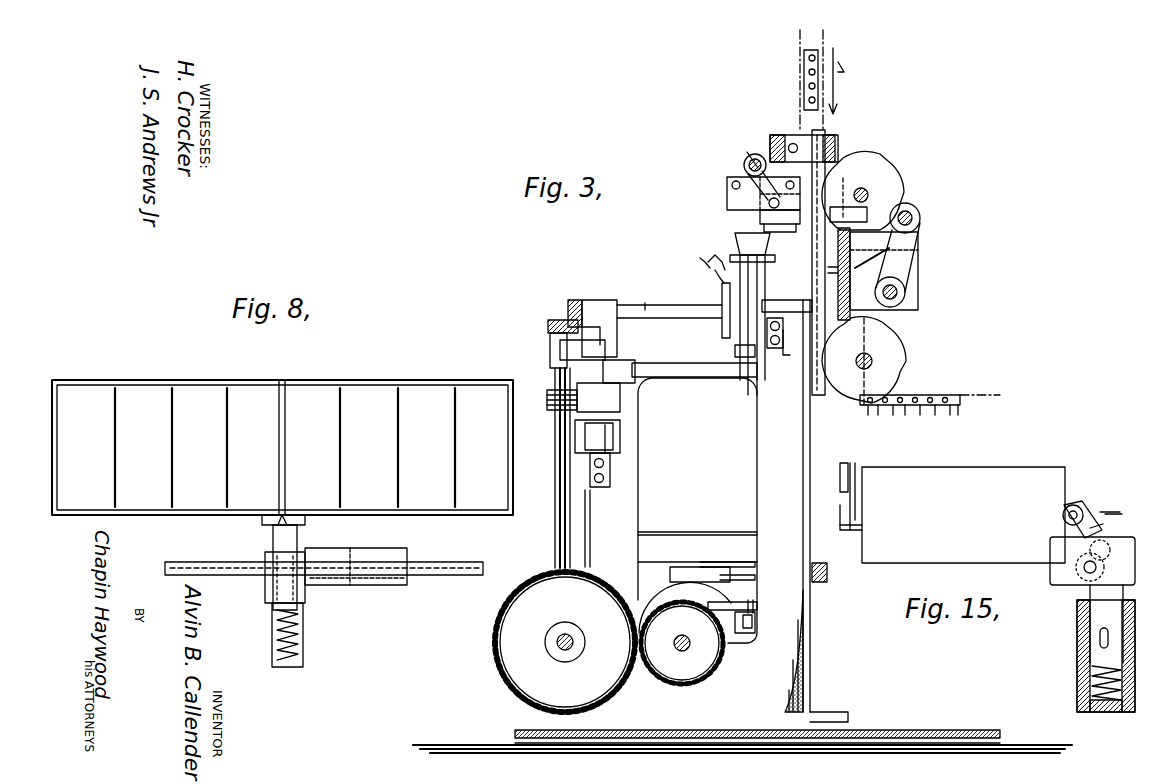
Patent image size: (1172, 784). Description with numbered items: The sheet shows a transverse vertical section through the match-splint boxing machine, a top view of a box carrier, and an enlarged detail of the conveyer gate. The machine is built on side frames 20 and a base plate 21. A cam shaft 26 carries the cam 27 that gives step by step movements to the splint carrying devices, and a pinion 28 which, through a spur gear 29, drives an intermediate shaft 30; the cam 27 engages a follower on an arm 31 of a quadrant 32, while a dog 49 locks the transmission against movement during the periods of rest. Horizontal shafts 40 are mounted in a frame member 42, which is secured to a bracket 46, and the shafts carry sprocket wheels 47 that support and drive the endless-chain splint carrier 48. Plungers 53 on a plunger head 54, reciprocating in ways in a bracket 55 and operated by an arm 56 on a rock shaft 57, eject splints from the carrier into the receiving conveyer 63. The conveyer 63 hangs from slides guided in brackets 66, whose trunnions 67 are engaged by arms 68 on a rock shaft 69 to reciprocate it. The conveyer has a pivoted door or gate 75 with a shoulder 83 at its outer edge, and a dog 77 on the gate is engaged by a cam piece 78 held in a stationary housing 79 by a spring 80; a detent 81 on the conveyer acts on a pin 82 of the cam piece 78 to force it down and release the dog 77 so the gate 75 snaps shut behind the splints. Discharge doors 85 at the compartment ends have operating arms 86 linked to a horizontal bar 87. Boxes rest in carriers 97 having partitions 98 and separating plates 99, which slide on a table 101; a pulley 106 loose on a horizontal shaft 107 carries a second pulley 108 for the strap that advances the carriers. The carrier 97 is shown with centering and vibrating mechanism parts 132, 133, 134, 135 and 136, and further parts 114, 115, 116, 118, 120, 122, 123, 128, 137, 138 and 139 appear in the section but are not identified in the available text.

In FIG. 8, the box carrier 97 is at (282, 432).
In FIG. 8, the partition 98 is at (290, 388).
In FIG. 8, the separating plates 99 is at (120, 458).
In FIG. 8, the box support 133 is at (272, 522).
In FIG. 8, the rod 132 is at (296, 542).
In FIG. 3, the rod 132 is at (715, 268).
In FIG. 8, the guide block 134 is at (300, 590).
In FIG. 8, the bar 135 is at (445, 577).
In FIG. 3, the bar 135 is at (722, 288).
In FIG. 8, the sleeve 136 is at (385, 586).
In FIG. 3, the side frames 20 is at (816, 511).
In FIG. 3, the base plate 21 is at (742, 726).
In FIG. 3, the frame column 114 is at (803, 385).
In FIG. 3, the frame member 42 is at (840, 150).
In FIG. 3, the brackets 66 is at (728, 185).
In FIG. 3, the trunnions 67 is at (734, 193).
In FIG. 3, the receiving conveyer 63 is at (760, 218).
In FIG. 15, the receiving conveyer 63 is at (963, 515).
In FIG. 3, the arms 68 is at (744, 166).
In FIG. 3, the rock shaft 69 is at (752, 152).
In FIG. 3, the sprocket wheels 47 is at (892, 172).
In FIG. 3, the plungers 53 is at (834, 210).
In FIG. 3, the horizontal shafts 40 is at (869, 195).
In FIG. 3, the plunger head 54 is at (920, 212).
In FIG. 3, the bracket 55 is at (895, 247).
In FIG. 3, the arm 56 is at (908, 270).
In FIG. 3, the rock shaft 57 is at (906, 292).
In FIG. 3, the door or gate 75 is at (905, 278).
In FIG. 15, the door or gate 75 is at (1104, 510).
In FIG. 3, the splint carrier 48 is at (938, 400).
In FIG. 3, the bracket 46 is at (766, 306).
In FIG. 3, the table 101 is at (768, 260).
In FIG. 3, the discharge door 85 is at (706, 245).
In FIG. 3, the bracket 115 is at (788, 332).
In FIG. 3, the pulley 108 is at (735, 350).
In FIG. 3, the pulley 106 is at (755, 380).
In FIG. 3, the shaft 137 is at (712, 318).
In FIG. 3, the horizontal shaft 107 is at (642, 295).
In FIG. 3, the bevel gear 138 is at (575, 302).
In FIG. 3, the bevel gear 139 is at (548, 325).
In FIG. 3, the bearing 128 is at (550, 357).
In FIG. 3, the threaded collar 122 is at (553, 412).
In FIG. 3, the vertical shaft 123 is at (557, 492).
In FIG. 3, the slide bar 116 is at (622, 407).
In FIG. 3, the block 118 is at (620, 428).
In FIG. 3, the bracket 120 is at (612, 468).
In FIG. 3, the cam 27 is at (658, 590).
In FIG. 3, the arm 31 is at (690, 568).
In FIG. 3, the quadrant 32 is at (752, 565).
In FIG. 3, the dog 49 is at (745, 603).
In FIG. 3, the spur gear 29 is at (500, 688).
In FIG. 3, the intermediate shaft 30 is at (565, 652).
In FIG. 3, the pinion 28 is at (672, 685).
In FIG. 3, the cam shaft 26 is at (692, 650).
In FIG. 3, the horizontal bar 87 is at (840, 482).
In FIG. 3, the operating arms 86 is at (862, 493).
In FIG. 15, the cam piece 78 is at (1135, 555).
In FIG. 15, the housing 79 is at (1077, 640).
In FIG. 15, the spring 80 is at (1088, 687).
In FIG. 15, the dog 77 is at (1062, 524).
In FIG. 15, the pin 82 is at (1086, 574).
In FIG. 15, the shoulder 83 is at (1110, 512).
In FIG. 15, the detent 81 is at (1100, 530).